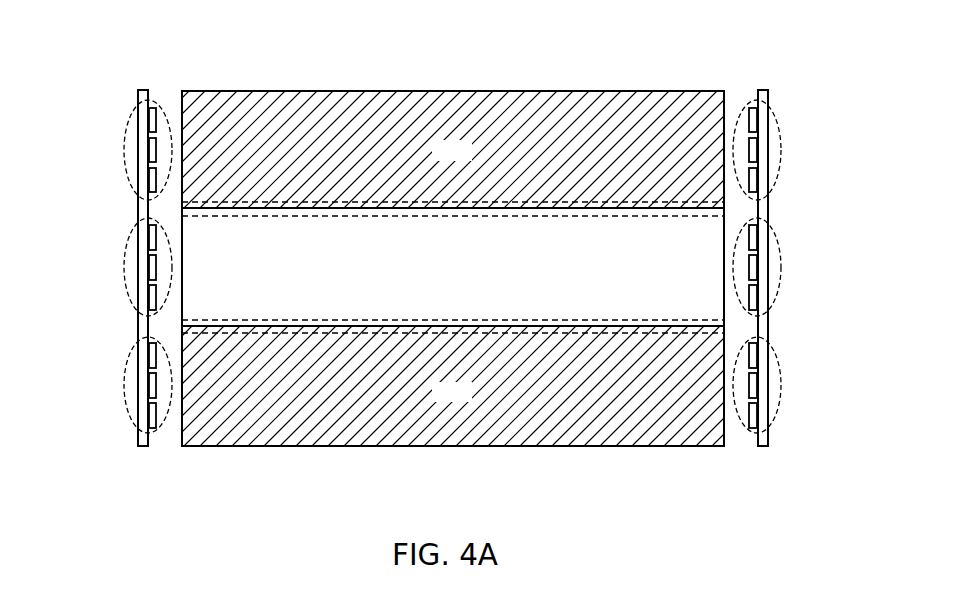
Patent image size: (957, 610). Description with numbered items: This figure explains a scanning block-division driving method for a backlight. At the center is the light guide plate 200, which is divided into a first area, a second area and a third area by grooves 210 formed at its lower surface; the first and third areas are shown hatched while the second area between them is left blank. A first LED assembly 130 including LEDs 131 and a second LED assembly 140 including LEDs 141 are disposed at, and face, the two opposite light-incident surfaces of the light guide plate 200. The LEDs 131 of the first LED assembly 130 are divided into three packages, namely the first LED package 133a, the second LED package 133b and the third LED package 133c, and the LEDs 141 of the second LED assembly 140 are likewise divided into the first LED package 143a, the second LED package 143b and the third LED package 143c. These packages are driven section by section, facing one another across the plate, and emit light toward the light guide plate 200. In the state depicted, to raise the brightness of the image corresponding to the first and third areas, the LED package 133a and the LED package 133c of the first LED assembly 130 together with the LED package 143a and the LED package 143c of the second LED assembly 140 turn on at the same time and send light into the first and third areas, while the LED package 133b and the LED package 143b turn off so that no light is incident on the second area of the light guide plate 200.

The light guide plate 200 is at (630, 118).
The grooves 210 is at (539, 207).
The first LED assembly 130 is at (760, 447).
The LEDs 131 is at (750, 422).
The (1-1)st LED package 133a is at (781, 385).
The (1-2)nd LED package 133b is at (781, 267).
The (1-3)rd LED package 133c is at (781, 150).
The second LED assembly 140 is at (146, 447).
The LEDs 141 is at (157, 420).
The (2-1)st LED package 143a is at (124, 385).
The (2-2)nd LED package 143b is at (124, 267).
The (2-3)rd LED package 143c is at (124, 150).